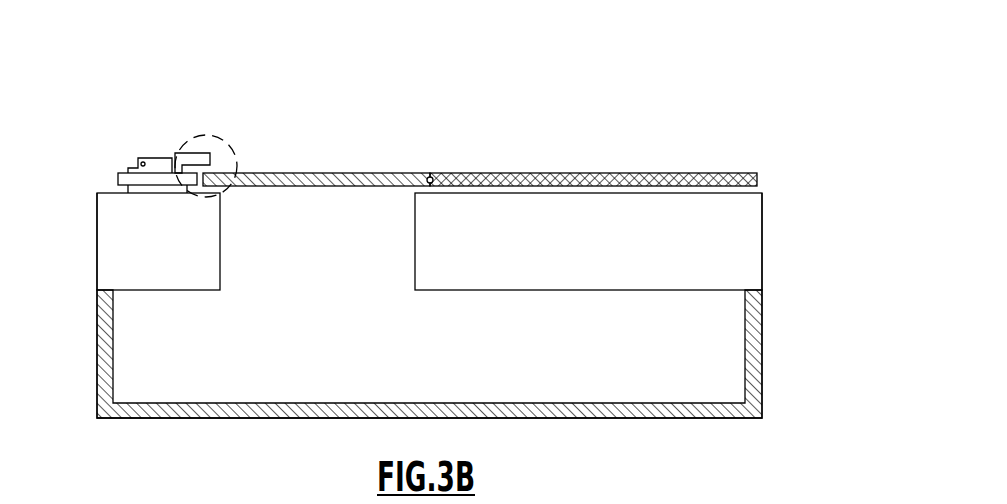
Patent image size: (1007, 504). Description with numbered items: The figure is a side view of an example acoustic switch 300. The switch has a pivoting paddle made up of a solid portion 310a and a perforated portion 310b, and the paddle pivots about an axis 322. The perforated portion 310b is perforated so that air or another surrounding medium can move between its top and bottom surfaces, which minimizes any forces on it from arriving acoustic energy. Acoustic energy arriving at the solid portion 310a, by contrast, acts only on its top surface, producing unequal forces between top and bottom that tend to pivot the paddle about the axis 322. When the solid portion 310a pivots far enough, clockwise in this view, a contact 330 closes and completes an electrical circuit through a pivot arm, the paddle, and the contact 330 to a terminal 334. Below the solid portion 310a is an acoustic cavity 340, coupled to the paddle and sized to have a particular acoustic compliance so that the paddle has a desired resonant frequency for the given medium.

The acoustic switch 300 is at (688, 111).
The solid portion 310a is at (350, 173).
The perforated portion 310b is at (555, 173).
The axis 322 is at (430, 173).
The contact 330 is at (198, 139).
The terminal 334 is at (143, 158).
The acoustic cavity 340 is at (650, 375).